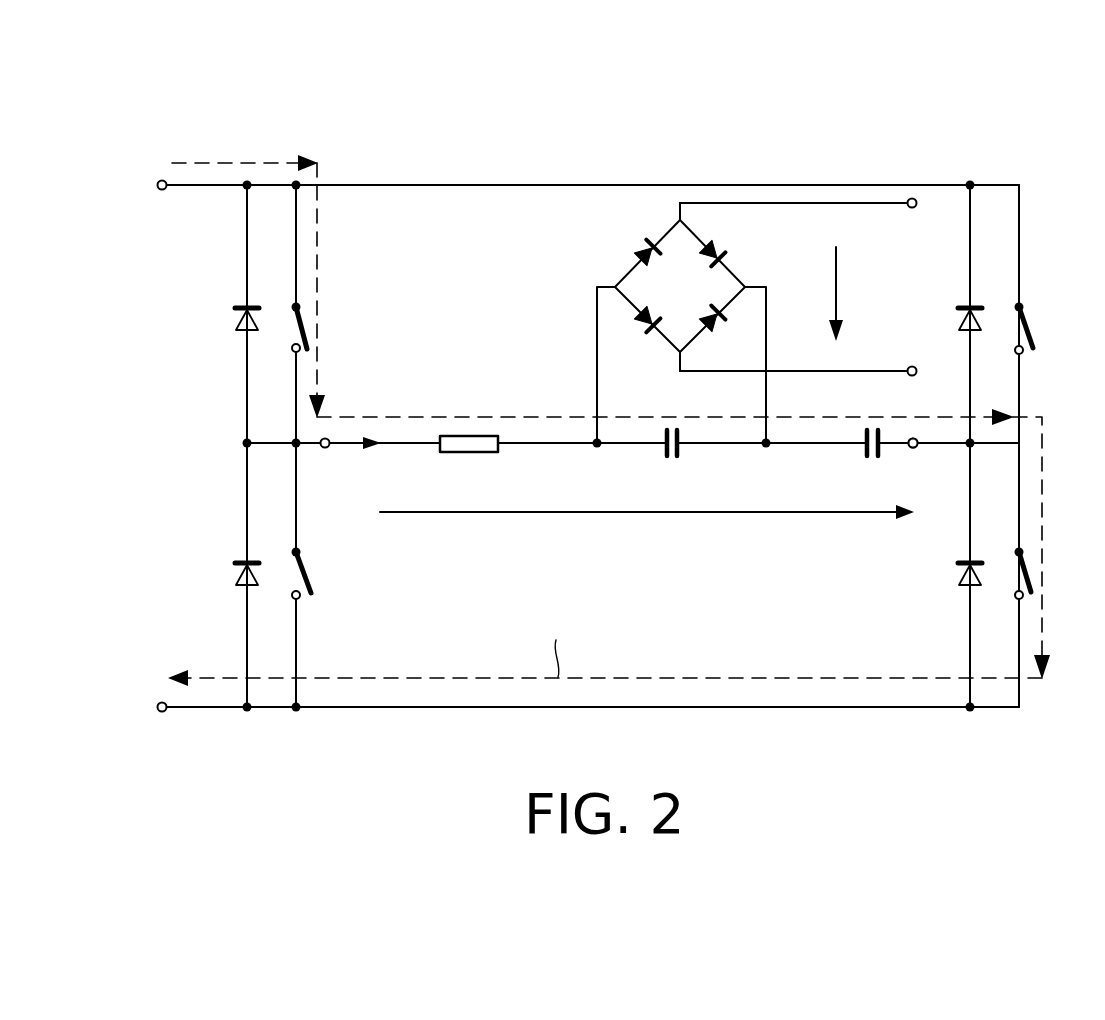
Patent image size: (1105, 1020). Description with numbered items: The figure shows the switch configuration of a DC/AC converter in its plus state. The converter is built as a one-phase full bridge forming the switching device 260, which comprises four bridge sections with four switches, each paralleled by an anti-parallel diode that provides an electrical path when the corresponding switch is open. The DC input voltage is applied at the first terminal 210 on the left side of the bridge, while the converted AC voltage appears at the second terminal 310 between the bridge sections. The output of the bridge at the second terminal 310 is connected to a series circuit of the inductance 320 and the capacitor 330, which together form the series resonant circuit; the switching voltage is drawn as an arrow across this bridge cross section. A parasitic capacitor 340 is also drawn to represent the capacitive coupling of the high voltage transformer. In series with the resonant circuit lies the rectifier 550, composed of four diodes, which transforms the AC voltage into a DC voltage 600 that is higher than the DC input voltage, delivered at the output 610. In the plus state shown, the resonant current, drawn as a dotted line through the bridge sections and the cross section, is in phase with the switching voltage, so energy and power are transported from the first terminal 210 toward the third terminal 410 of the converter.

The first terminal 210 is at (158, 185).
The switching device 260 is at (459, 96).
The second terminal 310 is at (325, 449).
The inductance 320 is at (466, 435).
The capacitor 330 is at (864, 454).
The parasitic capacitor 340 is at (681, 456).
The third terminal 410 is at (935, 491).
The rectifier 550 is at (535, 257).
The DC voltage 600 is at (835, 258).
The output 610 is at (913, 208).